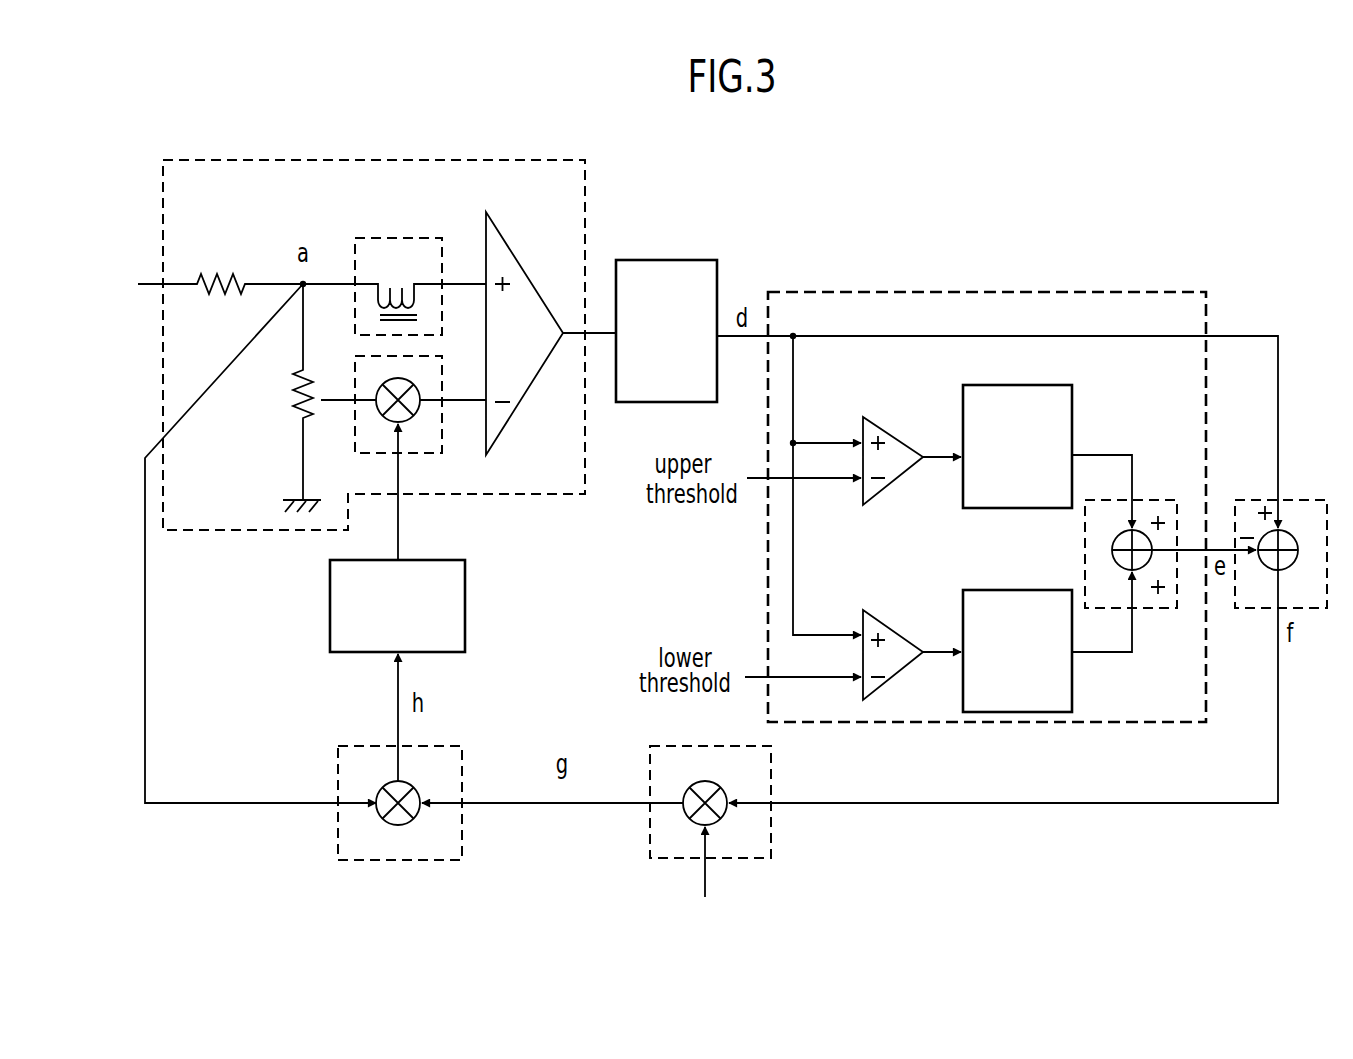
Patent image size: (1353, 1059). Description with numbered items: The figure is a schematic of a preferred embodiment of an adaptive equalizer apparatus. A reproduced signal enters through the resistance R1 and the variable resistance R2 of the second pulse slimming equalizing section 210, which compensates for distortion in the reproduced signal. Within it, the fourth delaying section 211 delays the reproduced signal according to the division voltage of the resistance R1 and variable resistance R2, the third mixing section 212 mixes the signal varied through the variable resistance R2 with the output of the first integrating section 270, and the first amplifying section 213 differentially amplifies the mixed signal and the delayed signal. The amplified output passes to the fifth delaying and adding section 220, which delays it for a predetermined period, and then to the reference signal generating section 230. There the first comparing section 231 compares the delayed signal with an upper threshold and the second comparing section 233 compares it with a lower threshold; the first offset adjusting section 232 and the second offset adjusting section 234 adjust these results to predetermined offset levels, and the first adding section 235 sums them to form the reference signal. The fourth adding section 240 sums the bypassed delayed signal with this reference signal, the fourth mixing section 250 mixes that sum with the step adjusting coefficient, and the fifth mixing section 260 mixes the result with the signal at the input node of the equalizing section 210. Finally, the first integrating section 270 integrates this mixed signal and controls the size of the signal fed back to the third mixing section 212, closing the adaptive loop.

The second pulse slimming equalizing section 210 is at (502, 160).
The fourth delaying section 211 is at (392, 252).
The third mixing section 212 is at (413, 437).
The first amplifying section 213 is at (523, 393).
The fifth delaying and adding section 220 is at (662, 258).
The reference signal generating section 230 is at (1122, 292).
The first comparing section 231 is at (900, 437).
The first offset adjusting section 232 is at (1073, 407).
The second comparing section 233 is at (900, 630).
The second offset adjusting section 234 is at (1007, 590).
The first adding section 235 is at (1155, 500).
The fourth adding section 240 is at (1252, 500).
The fourth mixing section 250 is at (762, 837).
The fifth mixing section 260 is at (450, 837).
The first integrating section 270 is at (466, 598).
The resistance R1 is at (220, 263).
The variable resistance R2 is at (285, 398).